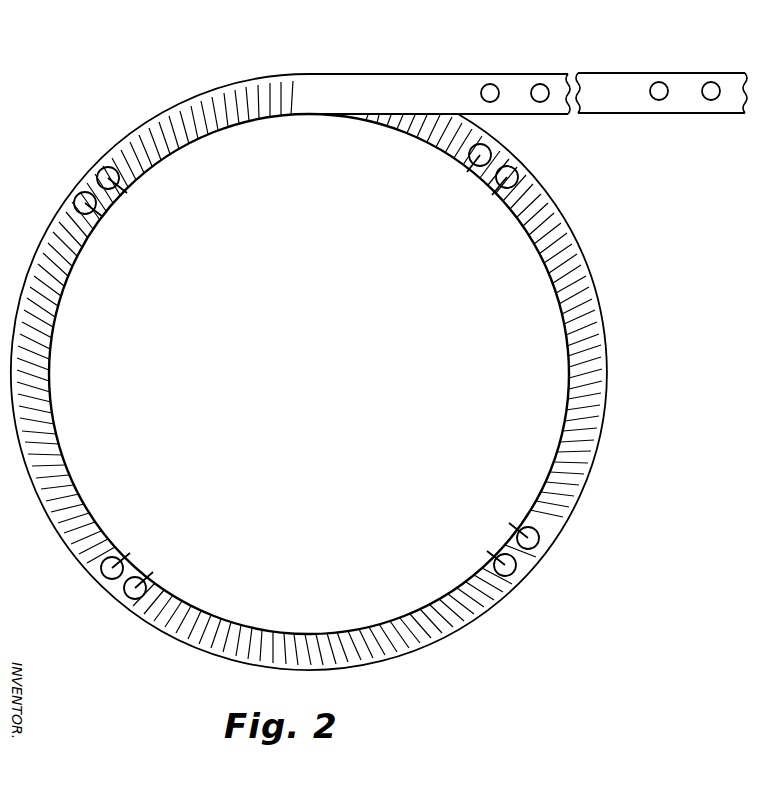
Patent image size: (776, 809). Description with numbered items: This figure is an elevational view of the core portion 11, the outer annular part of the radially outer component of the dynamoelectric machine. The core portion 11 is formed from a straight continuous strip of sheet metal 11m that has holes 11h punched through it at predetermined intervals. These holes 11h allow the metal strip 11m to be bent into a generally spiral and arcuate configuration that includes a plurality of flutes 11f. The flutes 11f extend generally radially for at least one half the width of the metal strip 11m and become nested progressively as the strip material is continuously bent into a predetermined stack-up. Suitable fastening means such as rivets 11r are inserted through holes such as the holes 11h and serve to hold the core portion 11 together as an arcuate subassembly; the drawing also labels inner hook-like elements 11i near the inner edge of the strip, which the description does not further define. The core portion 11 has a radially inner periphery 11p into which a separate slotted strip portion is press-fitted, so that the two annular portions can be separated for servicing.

The core portion 11 is at (608, 354).
The flutes 11f is at (213, 134).
The holes 11h is at (539, 92).
The inner hooks 11i is at (94, 208).
The metal strip 11m is at (600, 84).
The radially inner periphery 11p is at (46, 411).
The rivets 11r is at (502, 186).